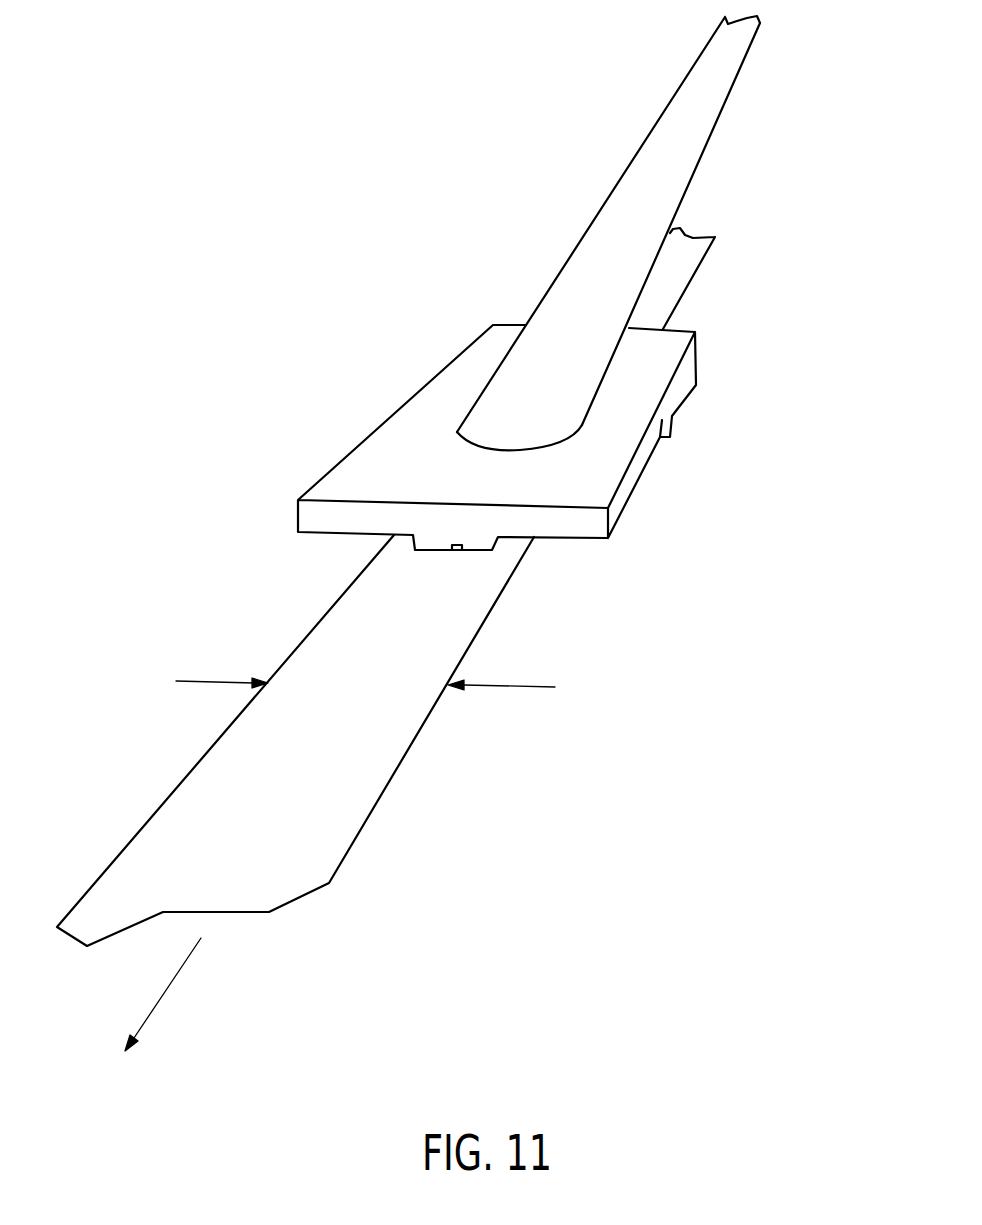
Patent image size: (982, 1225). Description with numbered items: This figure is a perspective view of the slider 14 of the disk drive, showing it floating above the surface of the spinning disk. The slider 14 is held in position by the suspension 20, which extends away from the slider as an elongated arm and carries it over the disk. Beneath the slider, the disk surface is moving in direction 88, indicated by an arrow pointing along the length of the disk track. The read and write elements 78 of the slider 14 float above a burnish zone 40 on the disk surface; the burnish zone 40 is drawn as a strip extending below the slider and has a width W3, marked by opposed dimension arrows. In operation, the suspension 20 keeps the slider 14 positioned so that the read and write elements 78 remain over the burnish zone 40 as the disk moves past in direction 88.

The slider 14 is at (713, 387).
The suspension 20 is at (667, 163).
The burnish zone 40 is at (324, 813).
The read and write elements 78 is at (460, 551).
The direction 88 is at (165, 989).
The width w-3 W3 is at (524, 688).